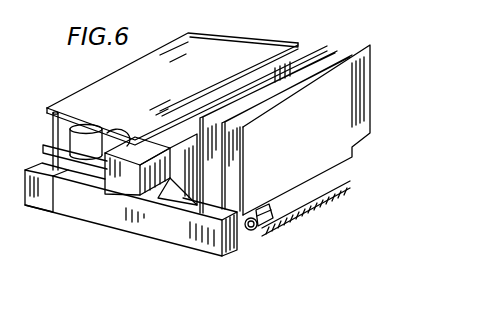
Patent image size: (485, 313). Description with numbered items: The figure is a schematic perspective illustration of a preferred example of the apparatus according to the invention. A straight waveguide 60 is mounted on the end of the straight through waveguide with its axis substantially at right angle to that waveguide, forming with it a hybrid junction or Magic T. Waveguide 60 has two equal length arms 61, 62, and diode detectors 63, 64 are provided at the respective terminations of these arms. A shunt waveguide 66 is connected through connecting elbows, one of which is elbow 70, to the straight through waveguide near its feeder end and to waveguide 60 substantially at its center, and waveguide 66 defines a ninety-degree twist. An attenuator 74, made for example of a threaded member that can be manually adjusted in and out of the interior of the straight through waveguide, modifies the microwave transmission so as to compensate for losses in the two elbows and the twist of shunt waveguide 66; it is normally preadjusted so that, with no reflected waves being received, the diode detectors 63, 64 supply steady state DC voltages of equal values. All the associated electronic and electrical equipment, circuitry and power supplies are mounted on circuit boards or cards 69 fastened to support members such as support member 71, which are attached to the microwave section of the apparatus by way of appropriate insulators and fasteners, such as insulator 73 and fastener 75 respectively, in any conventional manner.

The straight waveguide 60 is at (130, 220).
The arm 61 is at (196, 238).
The arm 62 is at (67, 203).
The diode detector 63 is at (44, 201).
The diode detector 64 is at (243, 232).
The shunt waveguide 66 is at (162, 162).
The circuit boards or cards 69 is at (345, 48).
The connecting elbow 70 is at (132, 187).
The support member 71 is at (356, 153).
The insulator 73 is at (49, 121).
The attenuator 74 is at (66, 133).
The fastener 75 is at (55, 106).